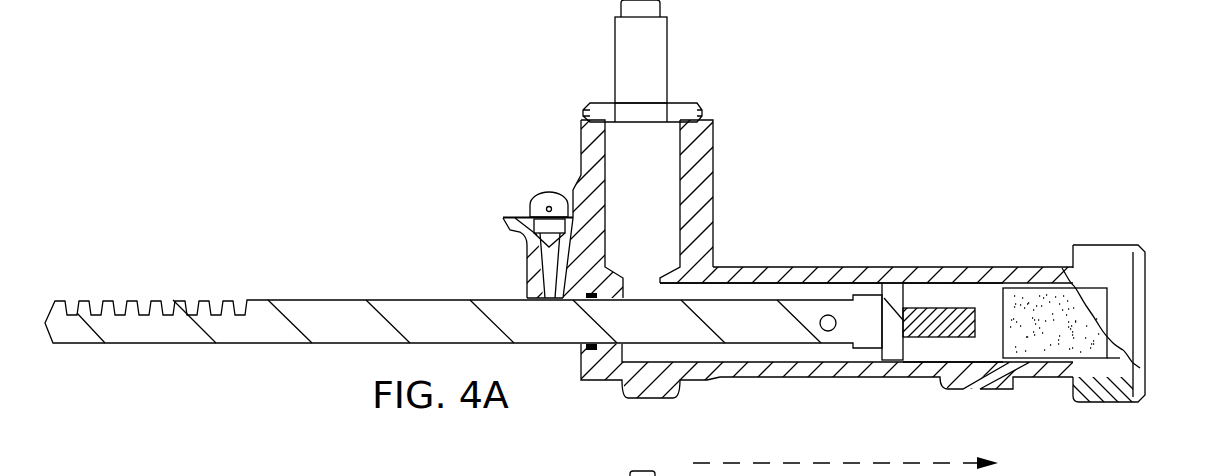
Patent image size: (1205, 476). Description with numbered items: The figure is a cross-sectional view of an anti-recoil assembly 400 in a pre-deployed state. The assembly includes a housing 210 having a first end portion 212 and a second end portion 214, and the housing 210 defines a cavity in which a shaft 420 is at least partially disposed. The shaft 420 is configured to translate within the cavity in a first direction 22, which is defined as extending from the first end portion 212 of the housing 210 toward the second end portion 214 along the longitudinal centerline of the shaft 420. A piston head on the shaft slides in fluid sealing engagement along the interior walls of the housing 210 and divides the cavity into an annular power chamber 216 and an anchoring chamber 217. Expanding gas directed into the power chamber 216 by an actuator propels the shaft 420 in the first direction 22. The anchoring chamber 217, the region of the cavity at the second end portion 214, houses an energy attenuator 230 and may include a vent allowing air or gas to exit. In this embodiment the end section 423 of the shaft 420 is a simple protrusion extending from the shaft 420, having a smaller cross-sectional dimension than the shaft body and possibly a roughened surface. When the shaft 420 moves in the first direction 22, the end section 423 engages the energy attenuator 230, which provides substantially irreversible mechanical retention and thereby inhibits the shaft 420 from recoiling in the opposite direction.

The anti-recoil assembly 400 is at (220, 88).
The shaft 420 is at (362, 320).
The housing 210 is at (863, 268).
The annular power chamber 216 is at (753, 287).
The end section 423 is at (943, 310).
The anchoring chamber 217 is at (978, 302).
The energy attenuator 230 is at (1062, 268).
The first end portion 212 is at (647, 377).
The second end portion 214 is at (1070, 370).
The first direction 22 is at (773, 463).